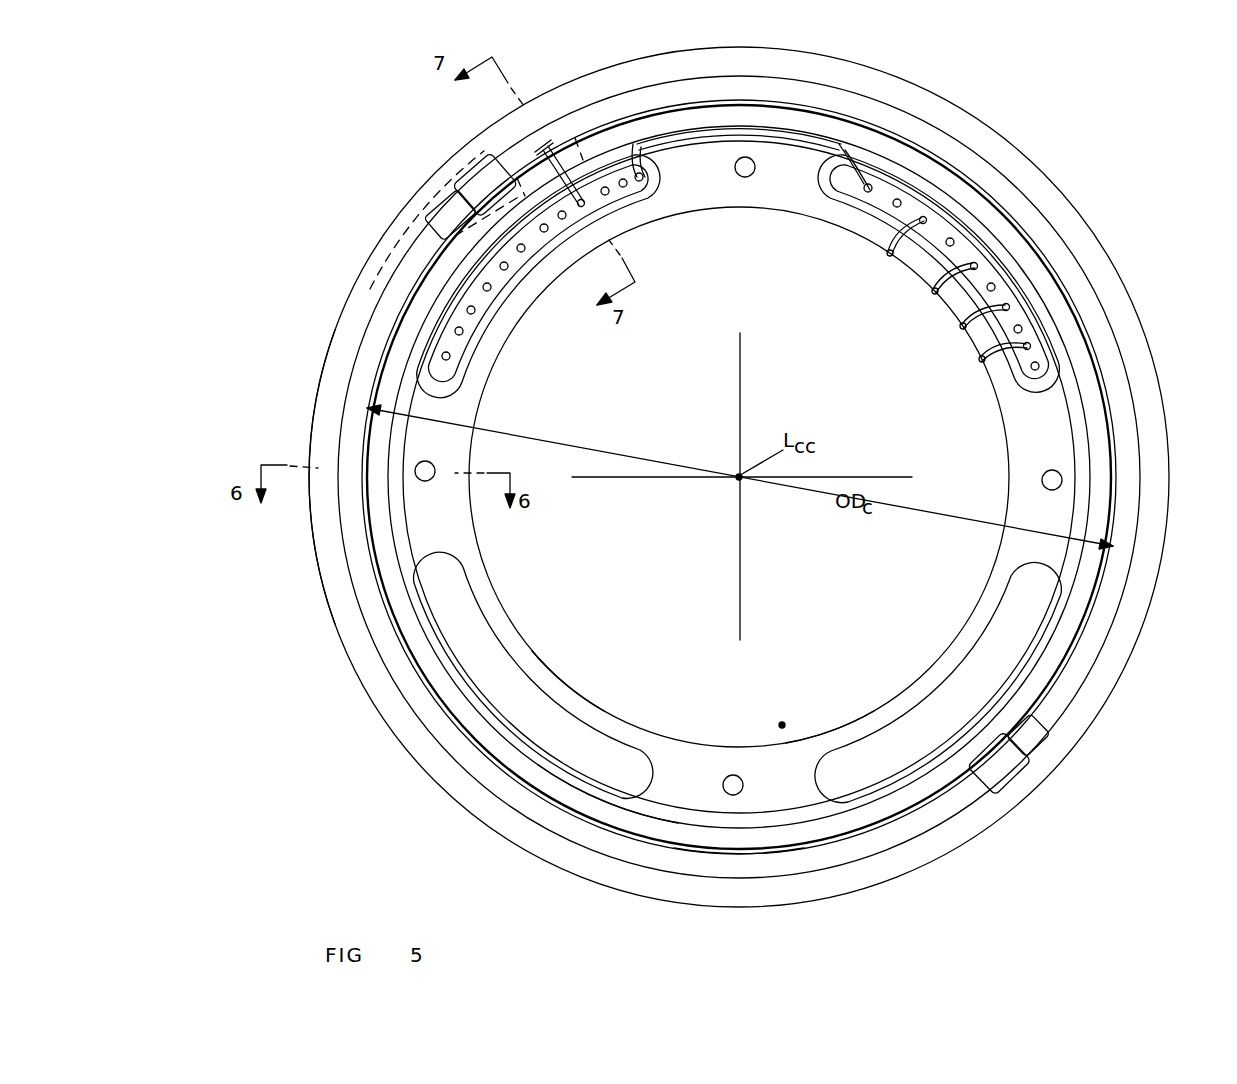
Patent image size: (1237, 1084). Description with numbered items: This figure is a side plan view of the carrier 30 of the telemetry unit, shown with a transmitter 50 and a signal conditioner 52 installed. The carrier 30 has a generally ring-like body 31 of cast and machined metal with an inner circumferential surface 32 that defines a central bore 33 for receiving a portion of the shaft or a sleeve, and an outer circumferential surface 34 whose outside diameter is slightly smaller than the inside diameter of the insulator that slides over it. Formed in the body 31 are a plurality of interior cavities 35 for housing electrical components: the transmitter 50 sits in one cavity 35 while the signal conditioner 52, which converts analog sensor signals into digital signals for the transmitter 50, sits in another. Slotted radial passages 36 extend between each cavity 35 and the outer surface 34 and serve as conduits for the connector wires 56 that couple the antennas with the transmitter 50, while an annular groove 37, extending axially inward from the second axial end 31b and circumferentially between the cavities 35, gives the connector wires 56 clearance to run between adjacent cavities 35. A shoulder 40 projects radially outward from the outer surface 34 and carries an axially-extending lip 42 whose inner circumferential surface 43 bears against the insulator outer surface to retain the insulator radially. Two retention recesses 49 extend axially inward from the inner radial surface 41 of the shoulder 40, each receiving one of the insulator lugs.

The carrier 30 is at (322, 650).
The ring-like body 31 is at (495, 582).
The second axial end 31b is at (592, 808).
The inner circumferential surface 32 is at (570, 686).
The bore 33 is at (783, 727).
The outer circumferential surface 34 is at (677, 850).
The interior cavities 35 is at (483, 330).
The radial passages 36 is at (408, 266).
The annular groove 37 is at (397, 520).
The shoulder 40 is at (355, 283).
The inner radial surface 41 is at (358, 568).
The lip 42 is at (325, 372).
The inner circumferential surface 43 is at (368, 326).
The retention recesses 49 is at (462, 190).
The transmitter 50 is at (523, 261).
The signal conditioner 52 is at (983, 285).
The connector wires 56 is at (548, 145).